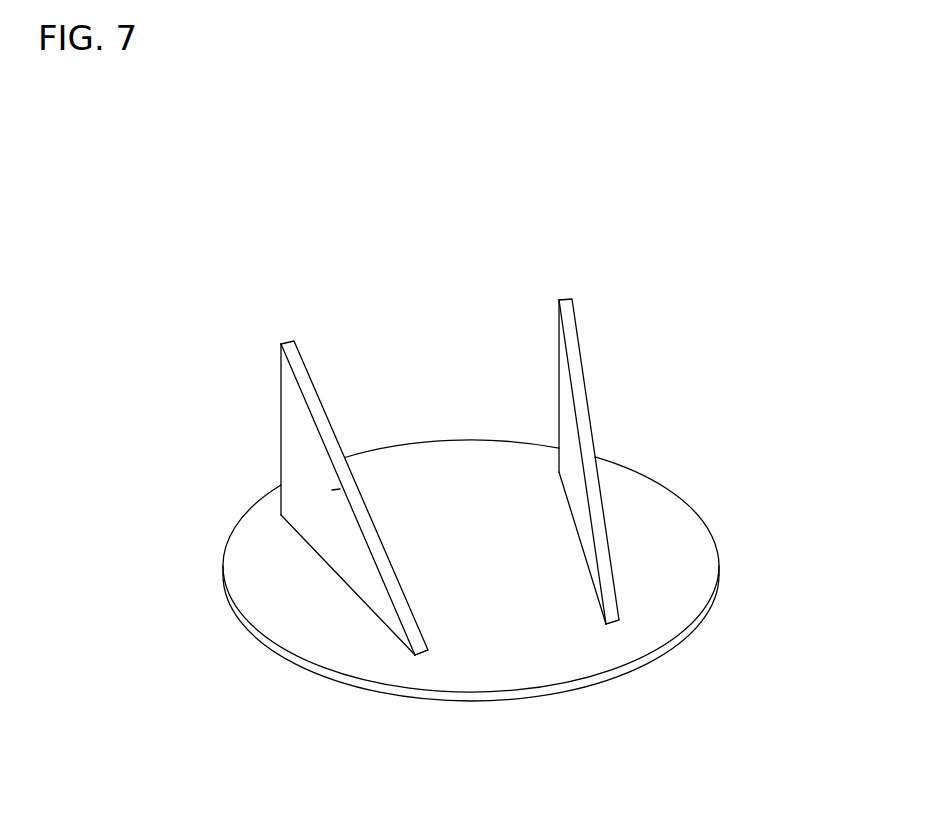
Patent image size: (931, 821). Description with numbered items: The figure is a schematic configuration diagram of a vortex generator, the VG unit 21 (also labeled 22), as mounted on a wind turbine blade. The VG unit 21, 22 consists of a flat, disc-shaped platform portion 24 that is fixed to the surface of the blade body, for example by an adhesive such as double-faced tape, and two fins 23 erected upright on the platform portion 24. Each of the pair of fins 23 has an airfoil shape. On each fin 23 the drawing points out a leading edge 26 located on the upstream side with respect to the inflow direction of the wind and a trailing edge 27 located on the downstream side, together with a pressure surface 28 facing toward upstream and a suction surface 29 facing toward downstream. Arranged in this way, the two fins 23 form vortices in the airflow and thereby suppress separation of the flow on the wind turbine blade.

The VG unit 21 is at (693, 302).
The wafer holding unit 22 is at (443, 531).
The fin 23 is at (302, 460).
The platform portion 24 is at (537, 662).
The leading edge 26 is at (392, 580).
The trailing edge 27 is at (282, 417).
The pressure surface 28 is at (297, 500).
The suction surface 29 is at (347, 487).